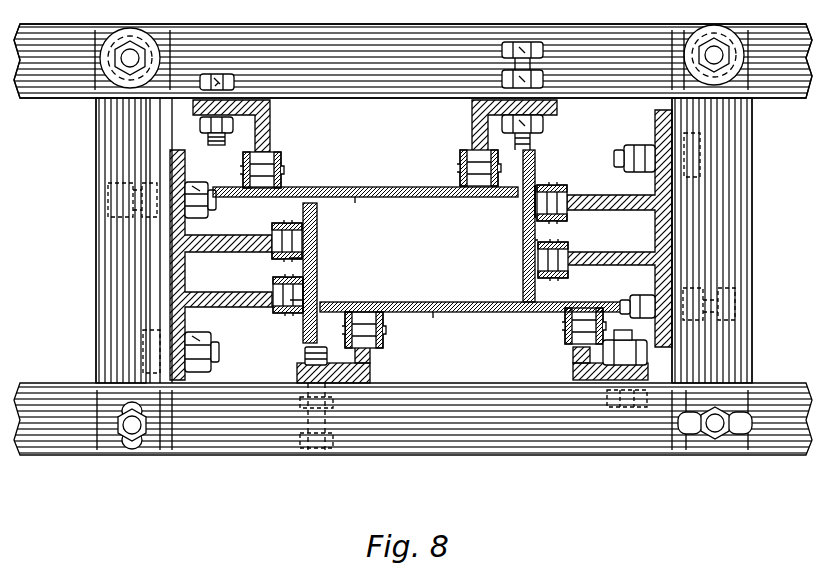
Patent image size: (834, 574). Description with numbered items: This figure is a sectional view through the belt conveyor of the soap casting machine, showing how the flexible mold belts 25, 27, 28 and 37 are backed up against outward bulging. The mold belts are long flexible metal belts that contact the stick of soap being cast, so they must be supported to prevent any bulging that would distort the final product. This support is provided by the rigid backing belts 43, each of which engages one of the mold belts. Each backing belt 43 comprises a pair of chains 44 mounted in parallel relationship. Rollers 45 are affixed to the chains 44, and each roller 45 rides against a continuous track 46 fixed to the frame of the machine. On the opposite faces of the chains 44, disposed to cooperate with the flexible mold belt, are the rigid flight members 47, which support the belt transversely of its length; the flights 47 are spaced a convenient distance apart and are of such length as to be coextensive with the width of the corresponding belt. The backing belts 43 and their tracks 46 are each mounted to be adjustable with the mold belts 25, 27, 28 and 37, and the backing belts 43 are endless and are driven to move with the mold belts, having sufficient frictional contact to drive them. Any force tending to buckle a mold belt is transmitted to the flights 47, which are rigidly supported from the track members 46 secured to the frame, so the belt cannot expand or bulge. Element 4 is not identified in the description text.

The side frame bracket 4 is at (221, 265).
The flexible mold belt 25 is at (392, 301).
The flexible mold belt 27 is at (522, 240).
The flexible mold belt 28 is at (318, 260).
The flexible mold belt 37 is at (384, 198).
The backing belt 43 is at (265, 220).
The chain 44 is at (280, 188).
The roller 45 is at (318, 292).
The track 46 is at (275, 162).
The flight member 47 is at (355, 186).